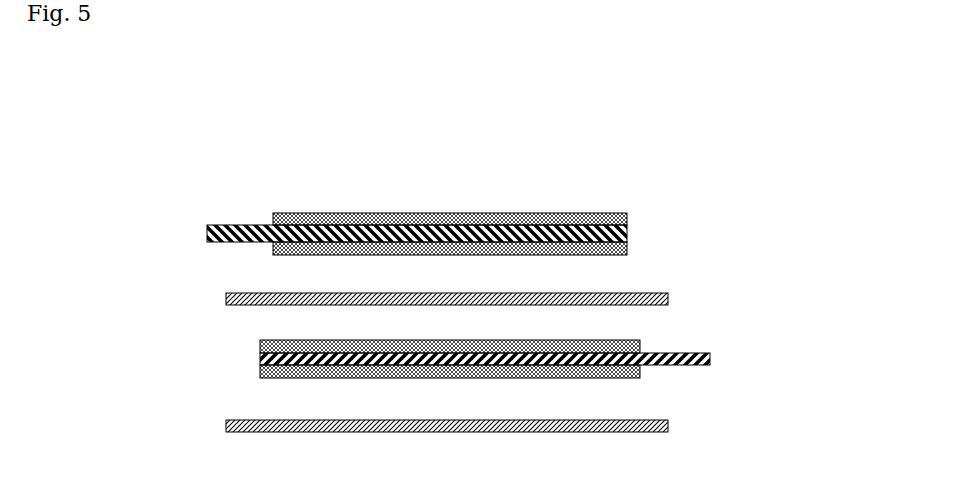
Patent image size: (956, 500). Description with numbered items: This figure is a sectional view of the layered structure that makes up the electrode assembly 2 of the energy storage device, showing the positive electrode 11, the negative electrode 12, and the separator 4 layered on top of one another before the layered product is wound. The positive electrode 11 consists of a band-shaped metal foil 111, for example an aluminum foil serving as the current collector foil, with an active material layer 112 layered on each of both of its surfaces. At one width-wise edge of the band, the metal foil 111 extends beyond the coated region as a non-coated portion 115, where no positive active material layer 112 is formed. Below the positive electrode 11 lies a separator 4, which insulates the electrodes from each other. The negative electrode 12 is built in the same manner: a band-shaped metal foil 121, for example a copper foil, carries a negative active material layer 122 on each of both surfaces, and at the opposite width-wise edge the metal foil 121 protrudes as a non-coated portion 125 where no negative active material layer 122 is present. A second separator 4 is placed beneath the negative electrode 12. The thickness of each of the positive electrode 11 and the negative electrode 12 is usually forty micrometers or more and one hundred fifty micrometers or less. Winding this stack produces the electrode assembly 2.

The electrode assembly 2 is at (150, 109).
The positive electrode 11 is at (722, 195).
The metal foil 111 is at (627, 237).
The active material layer 112 is at (627, 213).
The non-coated portion 115 is at (222, 222).
The separator 4 is at (226, 298).
The negative electrode 12 is at (162, 345).
The metal foil 121 is at (260, 359).
The negative active material layer 122 is at (260, 344).
The non-coated portion 125 is at (672, 370).